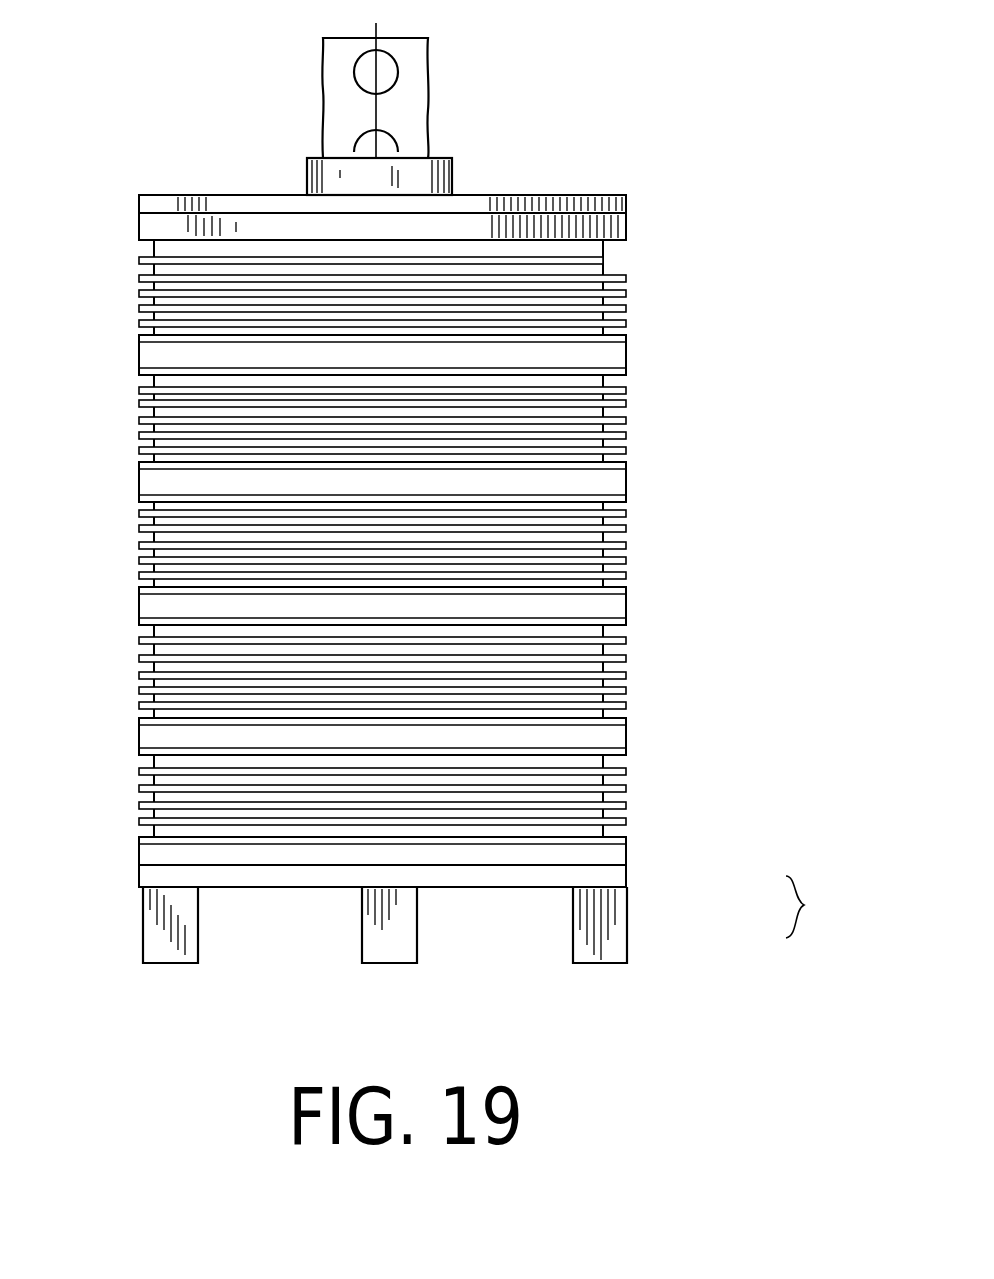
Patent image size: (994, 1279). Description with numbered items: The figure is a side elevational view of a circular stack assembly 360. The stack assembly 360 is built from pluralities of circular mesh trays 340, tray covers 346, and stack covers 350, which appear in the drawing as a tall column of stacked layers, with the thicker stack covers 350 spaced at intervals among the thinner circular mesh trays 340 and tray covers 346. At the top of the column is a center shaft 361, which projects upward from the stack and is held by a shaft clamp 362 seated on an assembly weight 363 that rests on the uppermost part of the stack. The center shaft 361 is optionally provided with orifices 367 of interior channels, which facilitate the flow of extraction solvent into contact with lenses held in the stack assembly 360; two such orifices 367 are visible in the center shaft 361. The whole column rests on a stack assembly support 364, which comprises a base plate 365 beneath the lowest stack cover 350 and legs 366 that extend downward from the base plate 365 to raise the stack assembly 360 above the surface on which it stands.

The circular mesh tray 340 is at (605, 283).
The tray cover 346 is at (628, 258).
The stack cover 350 is at (628, 222).
The stack assembly 360 is at (452, 940).
The center shaft 361 is at (323, 108).
The shaft clamp 362 is at (307, 158).
The assembly weight 363 is at (626, 197).
The stack assembly support 364 is at (833, 907).
The base plate 365 is at (628, 874).
The leg 366 is at (143, 916).
The orifice 367 is at (357, 68).